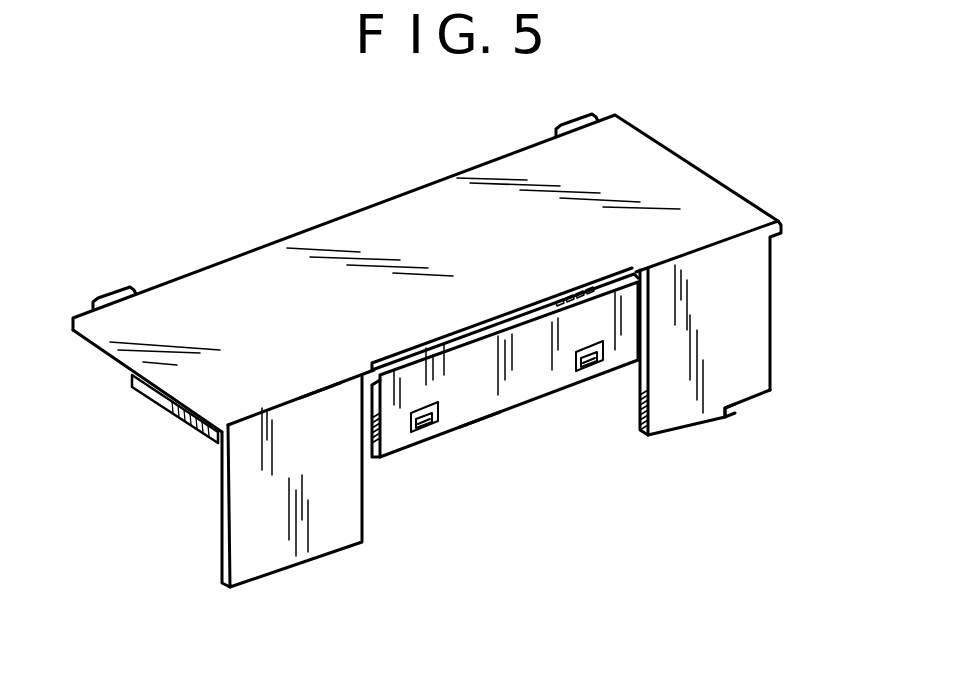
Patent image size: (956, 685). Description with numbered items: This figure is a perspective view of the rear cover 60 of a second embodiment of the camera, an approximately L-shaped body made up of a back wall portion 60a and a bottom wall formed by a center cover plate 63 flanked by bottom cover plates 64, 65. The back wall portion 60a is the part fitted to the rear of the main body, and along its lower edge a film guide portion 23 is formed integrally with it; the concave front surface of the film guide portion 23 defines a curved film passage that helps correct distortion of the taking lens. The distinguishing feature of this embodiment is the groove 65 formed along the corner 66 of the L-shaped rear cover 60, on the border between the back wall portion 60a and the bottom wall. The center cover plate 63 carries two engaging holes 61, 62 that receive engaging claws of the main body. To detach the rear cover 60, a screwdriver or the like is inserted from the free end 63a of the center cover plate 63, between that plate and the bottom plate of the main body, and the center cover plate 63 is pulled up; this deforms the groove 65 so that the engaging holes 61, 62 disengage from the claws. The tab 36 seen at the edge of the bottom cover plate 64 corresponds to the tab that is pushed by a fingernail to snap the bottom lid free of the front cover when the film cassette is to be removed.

The rear cover 60 is at (203, 258).
The back wall portion 60a is at (700, 193).
The groove 65 is at (492, 322).
The corner 66 is at (323, 386).
The bottom cover plate 64 is at (740, 340).
The tab 36 is at (720, 414).
The film guide portion 23 is at (167, 410).
The center cover plate 63 is at (520, 387).
The free end 63a is at (479, 420).
The engaging hole 61 is at (432, 433).
The engaging hole 62 is at (594, 366).